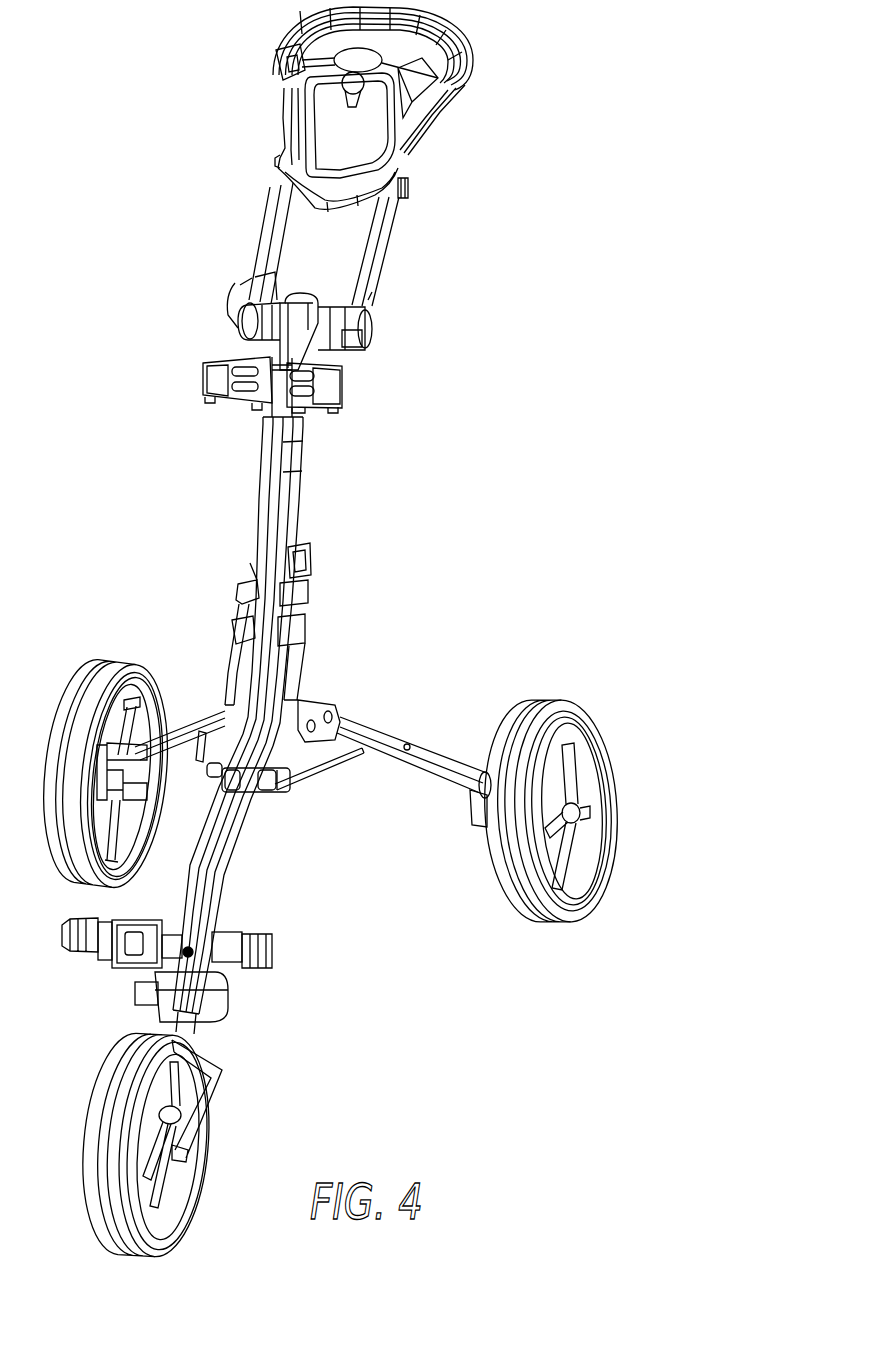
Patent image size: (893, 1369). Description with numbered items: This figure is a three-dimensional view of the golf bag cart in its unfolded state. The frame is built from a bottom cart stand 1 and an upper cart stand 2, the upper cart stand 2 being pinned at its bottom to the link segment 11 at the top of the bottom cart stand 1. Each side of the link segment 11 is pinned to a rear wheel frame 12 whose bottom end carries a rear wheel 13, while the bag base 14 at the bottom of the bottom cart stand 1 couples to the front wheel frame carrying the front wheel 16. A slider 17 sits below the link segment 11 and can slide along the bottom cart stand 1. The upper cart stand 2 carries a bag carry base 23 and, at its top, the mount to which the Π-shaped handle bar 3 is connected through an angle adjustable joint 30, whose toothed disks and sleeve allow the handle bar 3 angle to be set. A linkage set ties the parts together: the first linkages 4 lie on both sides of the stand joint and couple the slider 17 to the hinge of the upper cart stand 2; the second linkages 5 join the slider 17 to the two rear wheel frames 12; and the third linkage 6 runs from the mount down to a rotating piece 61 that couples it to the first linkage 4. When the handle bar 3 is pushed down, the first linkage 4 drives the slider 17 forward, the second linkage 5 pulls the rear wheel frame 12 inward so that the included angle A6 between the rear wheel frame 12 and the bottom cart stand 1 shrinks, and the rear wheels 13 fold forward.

The bottom cart stand 1 is at (217, 898).
The upper cart stand 2 is at (270, 502).
The handle bar 3 is at (377, 243).
The first linkage 4 is at (295, 668).
The second linkage 5 is at (320, 765).
The third linkage 6 is at (295, 462).
The link segment 11 is at (313, 703).
The rear wheel frame 12 is at (388, 740).
The rear wheel 13 is at (542, 710).
The bag base 14 is at (250, 972).
The front wheel 16 is at (203, 1168).
The slider 17 is at (268, 797).
The bag carry base 23 is at (327, 389).
The angle adjustable joint 30 is at (372, 327).
The rotating piece 61 is at (297, 567).
The included angle A6 is at (447, 788).